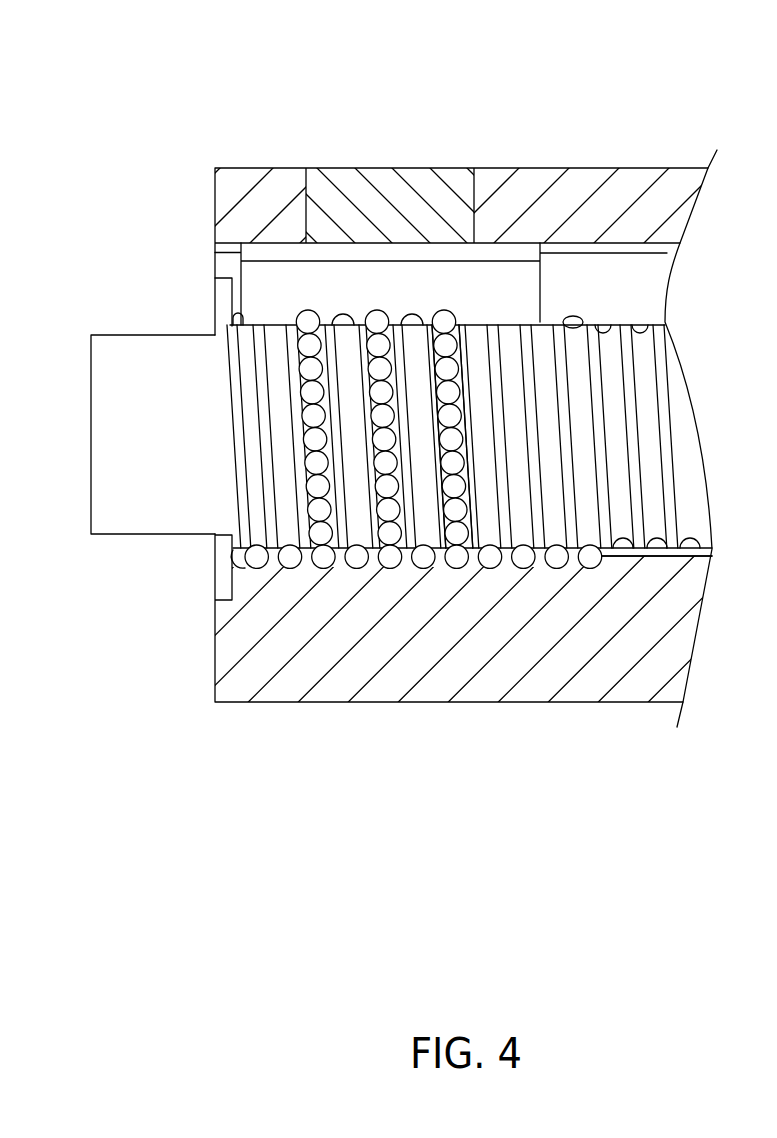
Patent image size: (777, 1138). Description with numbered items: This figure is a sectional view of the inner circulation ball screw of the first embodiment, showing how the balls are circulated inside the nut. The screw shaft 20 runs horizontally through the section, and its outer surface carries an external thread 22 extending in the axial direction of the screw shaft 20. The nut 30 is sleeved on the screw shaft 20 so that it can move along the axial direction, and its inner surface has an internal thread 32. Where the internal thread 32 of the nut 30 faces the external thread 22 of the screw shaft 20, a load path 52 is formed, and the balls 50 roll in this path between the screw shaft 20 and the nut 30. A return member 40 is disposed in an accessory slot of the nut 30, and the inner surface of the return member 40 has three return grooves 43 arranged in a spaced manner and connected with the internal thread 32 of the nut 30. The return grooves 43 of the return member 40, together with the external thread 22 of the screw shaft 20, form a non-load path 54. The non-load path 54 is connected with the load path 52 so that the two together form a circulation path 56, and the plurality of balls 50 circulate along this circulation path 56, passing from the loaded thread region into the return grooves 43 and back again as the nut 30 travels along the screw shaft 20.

The screw shaft 20 is at (128, 558).
The nut 30 is at (210, 162).
The return member 40 is at (241, 268).
The balls 50 is at (312, 416).
The return grooves 43 is at (427, 323).
The external thread 22 is at (458, 327).
The internal thread 32 is at (463, 567).
The non-load path 54 is at (535, 97).
The load path 52 is at (687, 97).
The circulation path 56 is at (487, 47).